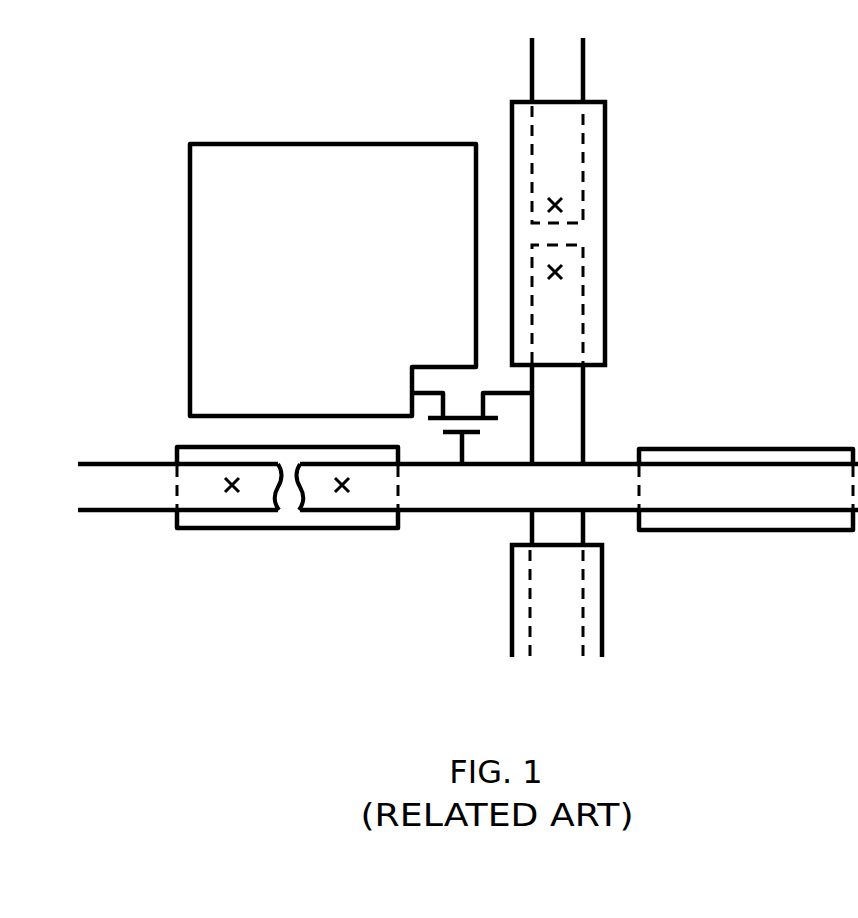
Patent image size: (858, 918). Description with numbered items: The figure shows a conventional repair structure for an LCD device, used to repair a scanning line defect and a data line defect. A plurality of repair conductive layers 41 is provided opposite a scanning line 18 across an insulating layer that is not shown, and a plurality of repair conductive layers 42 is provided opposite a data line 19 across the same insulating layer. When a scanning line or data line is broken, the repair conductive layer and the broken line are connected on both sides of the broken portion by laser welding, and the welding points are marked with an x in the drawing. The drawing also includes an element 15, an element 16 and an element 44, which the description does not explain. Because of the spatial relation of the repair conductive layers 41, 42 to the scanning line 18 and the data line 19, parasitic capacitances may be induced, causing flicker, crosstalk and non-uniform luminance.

The pixel electrode 15 is at (200, 233).
The repair conductive layer 41 is at (605, 183).
The data line repair region 44 is at (560, 233).
The data line 19 is at (583, 388).
The thin film transistor 16 is at (497, 425).
The scanning line 18 is at (765, 510).
The repair conductive layer 42 is at (320, 528).